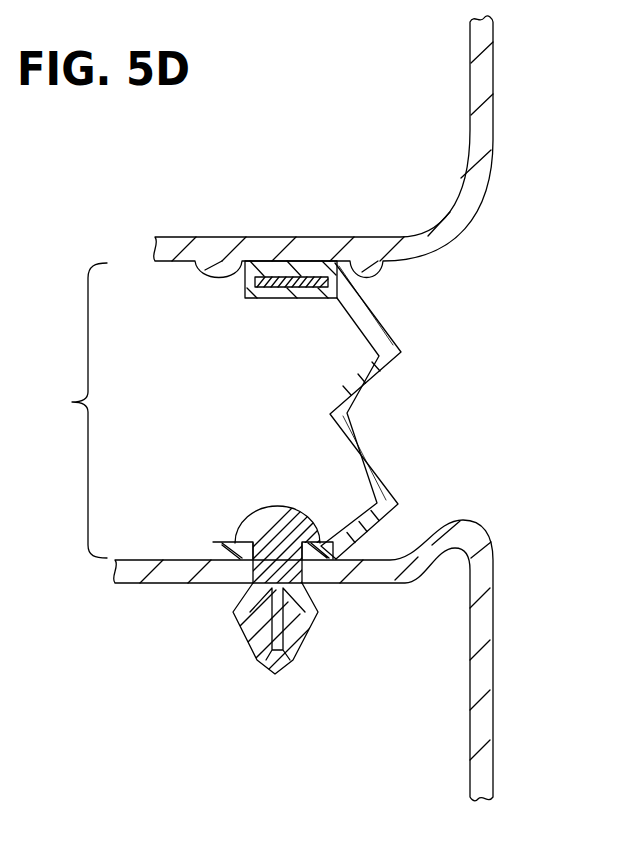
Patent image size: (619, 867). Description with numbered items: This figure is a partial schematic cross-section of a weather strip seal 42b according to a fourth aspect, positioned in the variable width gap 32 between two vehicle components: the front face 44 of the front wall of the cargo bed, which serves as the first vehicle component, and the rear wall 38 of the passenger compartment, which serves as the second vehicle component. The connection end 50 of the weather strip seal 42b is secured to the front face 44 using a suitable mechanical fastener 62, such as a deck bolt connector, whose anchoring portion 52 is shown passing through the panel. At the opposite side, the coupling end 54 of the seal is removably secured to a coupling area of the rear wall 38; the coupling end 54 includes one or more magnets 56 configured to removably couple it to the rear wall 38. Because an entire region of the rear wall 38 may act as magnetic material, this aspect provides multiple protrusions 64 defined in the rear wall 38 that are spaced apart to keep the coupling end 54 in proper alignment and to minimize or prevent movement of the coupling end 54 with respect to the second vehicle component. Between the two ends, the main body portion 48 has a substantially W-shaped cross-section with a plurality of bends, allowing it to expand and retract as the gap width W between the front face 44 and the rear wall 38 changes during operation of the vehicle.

The rear wall 38 is at (260, 237).
The weather strip seal 42b is at (360, 174).
The retention feature 64 is at (206, 282).
The coupling end 54 is at (265, 316).
The magnet 56 is at (299, 300).
The main body portion 48 is at (402, 336).
The gap 32 is at (336, 592).
The front face 44 is at (154, 559).
The connection end 50 is at (226, 542).
The mechanical fastener 62 is at (283, 507).
The fastener anchor 52 is at (246, 584).
The gap width W is at (71, 410).